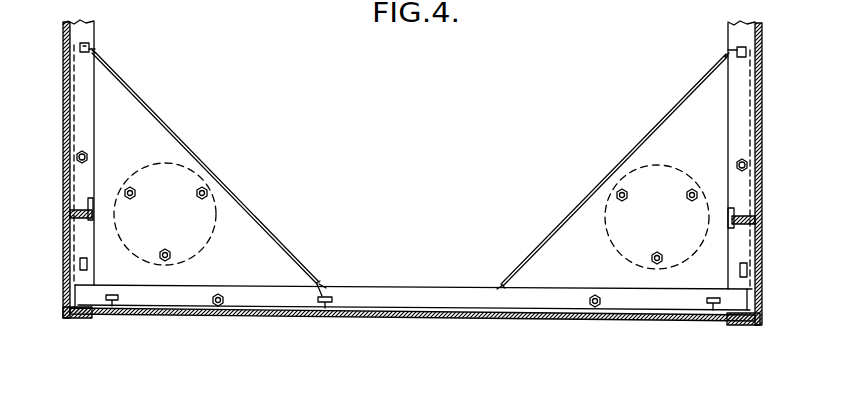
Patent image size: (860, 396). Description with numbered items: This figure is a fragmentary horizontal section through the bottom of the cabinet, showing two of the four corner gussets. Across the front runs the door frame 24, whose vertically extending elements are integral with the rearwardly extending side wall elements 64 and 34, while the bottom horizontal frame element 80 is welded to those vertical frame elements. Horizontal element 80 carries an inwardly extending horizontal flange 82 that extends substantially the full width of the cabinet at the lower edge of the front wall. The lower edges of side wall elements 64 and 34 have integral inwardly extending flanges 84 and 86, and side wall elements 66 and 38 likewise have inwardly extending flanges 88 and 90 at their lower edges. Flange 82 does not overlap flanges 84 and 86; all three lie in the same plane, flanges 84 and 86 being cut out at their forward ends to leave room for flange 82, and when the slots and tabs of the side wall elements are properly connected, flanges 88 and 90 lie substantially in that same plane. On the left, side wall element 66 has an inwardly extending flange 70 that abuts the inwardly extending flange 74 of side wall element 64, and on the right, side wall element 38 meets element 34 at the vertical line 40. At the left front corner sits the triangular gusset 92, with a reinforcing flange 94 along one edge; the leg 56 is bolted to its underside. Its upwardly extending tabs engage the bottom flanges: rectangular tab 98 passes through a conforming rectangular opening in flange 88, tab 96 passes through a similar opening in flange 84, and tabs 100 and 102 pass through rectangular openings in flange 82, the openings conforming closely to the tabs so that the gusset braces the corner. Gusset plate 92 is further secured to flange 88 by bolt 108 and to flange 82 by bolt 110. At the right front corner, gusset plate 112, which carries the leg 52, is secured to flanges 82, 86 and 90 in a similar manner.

The frame 24 is at (80, 312).
The side wall element 34 is at (760, 260).
The side wall element 38 is at (760, 128).
The vertical line 40 is at (758, 218).
The leg 52 is at (615, 246).
The leg 56 is at (215, 212).
The side wall element 64 is at (63, 258).
The side wall element 66 is at (63, 118).
The flange 70 is at (70, 213).
The flange 74 is at (86, 221).
The bottom horizontal frame element 80 is at (440, 316).
The horizontal flange 82 is at (410, 285).
The flange 84 is at (80, 278).
The flange 86 is at (738, 248).
The flange 88 is at (90, 34).
The flange 90 is at (735, 35).
The triangular gusset 92 is at (243, 233).
The reinforcing flange 94 is at (183, 137).
The tab 96 is at (88, 265).
The tab 98 is at (95, 48).
The tab 100 is at (112, 302).
The tab 102 is at (326, 302).
The bolt 108 is at (88, 156).
The bolt 110 is at (210, 303).
The gusset plate 112 is at (663, 141).